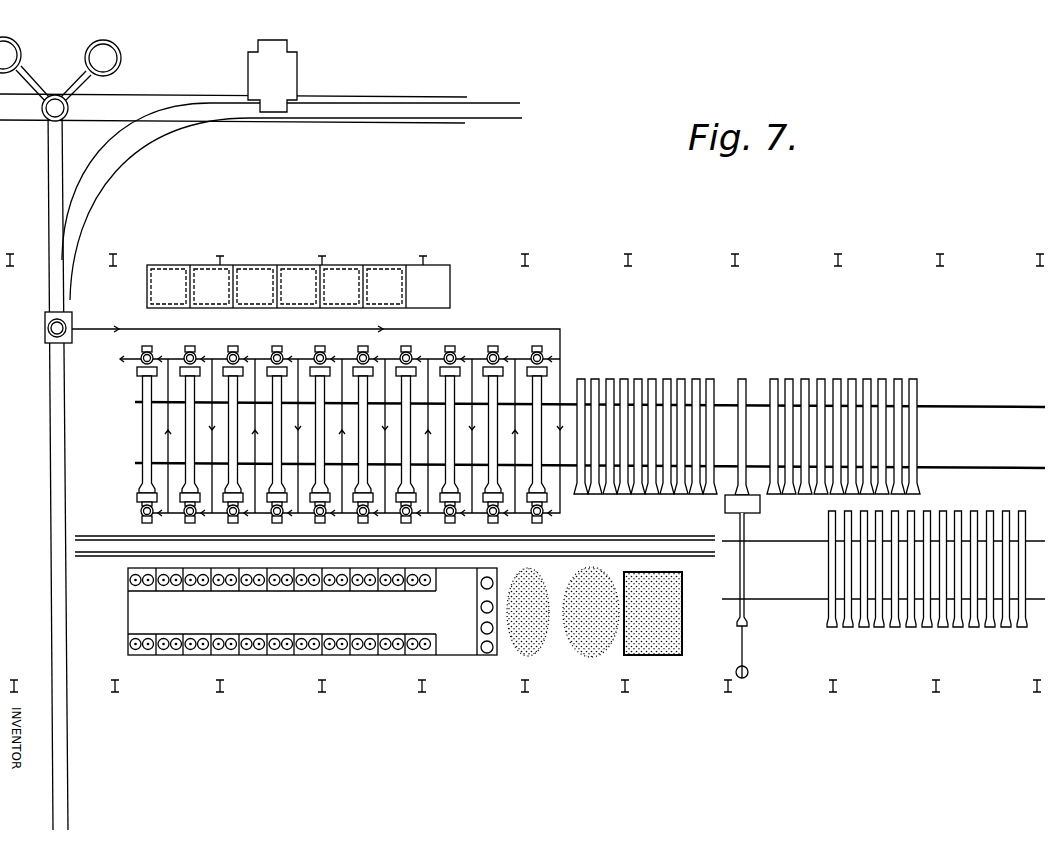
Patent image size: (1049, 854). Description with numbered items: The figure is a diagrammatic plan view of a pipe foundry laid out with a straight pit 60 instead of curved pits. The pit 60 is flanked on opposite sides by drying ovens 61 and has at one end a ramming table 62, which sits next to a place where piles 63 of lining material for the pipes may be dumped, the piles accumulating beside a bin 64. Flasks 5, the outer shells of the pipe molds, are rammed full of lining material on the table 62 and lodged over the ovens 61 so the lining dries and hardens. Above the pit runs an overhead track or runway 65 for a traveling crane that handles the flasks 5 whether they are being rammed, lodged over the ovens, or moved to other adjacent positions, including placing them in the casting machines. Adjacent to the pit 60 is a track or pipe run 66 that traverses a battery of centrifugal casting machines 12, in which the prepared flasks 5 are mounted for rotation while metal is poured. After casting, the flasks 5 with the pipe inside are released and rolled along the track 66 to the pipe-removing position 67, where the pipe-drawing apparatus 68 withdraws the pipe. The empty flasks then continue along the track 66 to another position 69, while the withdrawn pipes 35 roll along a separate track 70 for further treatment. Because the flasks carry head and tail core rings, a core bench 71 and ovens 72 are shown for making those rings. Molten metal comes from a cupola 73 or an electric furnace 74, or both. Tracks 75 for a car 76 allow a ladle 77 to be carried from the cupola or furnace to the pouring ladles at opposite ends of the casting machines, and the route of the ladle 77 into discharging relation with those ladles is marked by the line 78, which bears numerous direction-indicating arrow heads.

The flask 5 is at (640, 380).
The centrifugal casting machine 12 is at (272, 362).
The pipe 35 is at (960, 515).
The straight pit 60 is at (312, 611).
The drying oven 61 is at (278, 633).
The ramming table 62 is at (478, 598).
The pile of lining material 63 is at (578, 628).
The bin 64 is at (656, 655).
The overhead track or runway 65 is at (395, 535).
The track or pipe run 66 is at (140, 463).
The pipe-removing position 67 is at (744, 373).
The pipe-drawing apparatus 68 is at (746, 656).
The empty-flask position 69 is at (843, 424).
The track 70 is at (801, 566).
The core bench 71 is at (442, 293).
The oven 72 is at (291, 277).
The cupola 73 is at (60, 79).
The electric furnace 74 is at (290, 76).
The track 75 is at (93, 174).
The car 76 is at (45, 322).
The ladle 77 is at (52, 333).
The ladle path line 78 is at (113, 328).